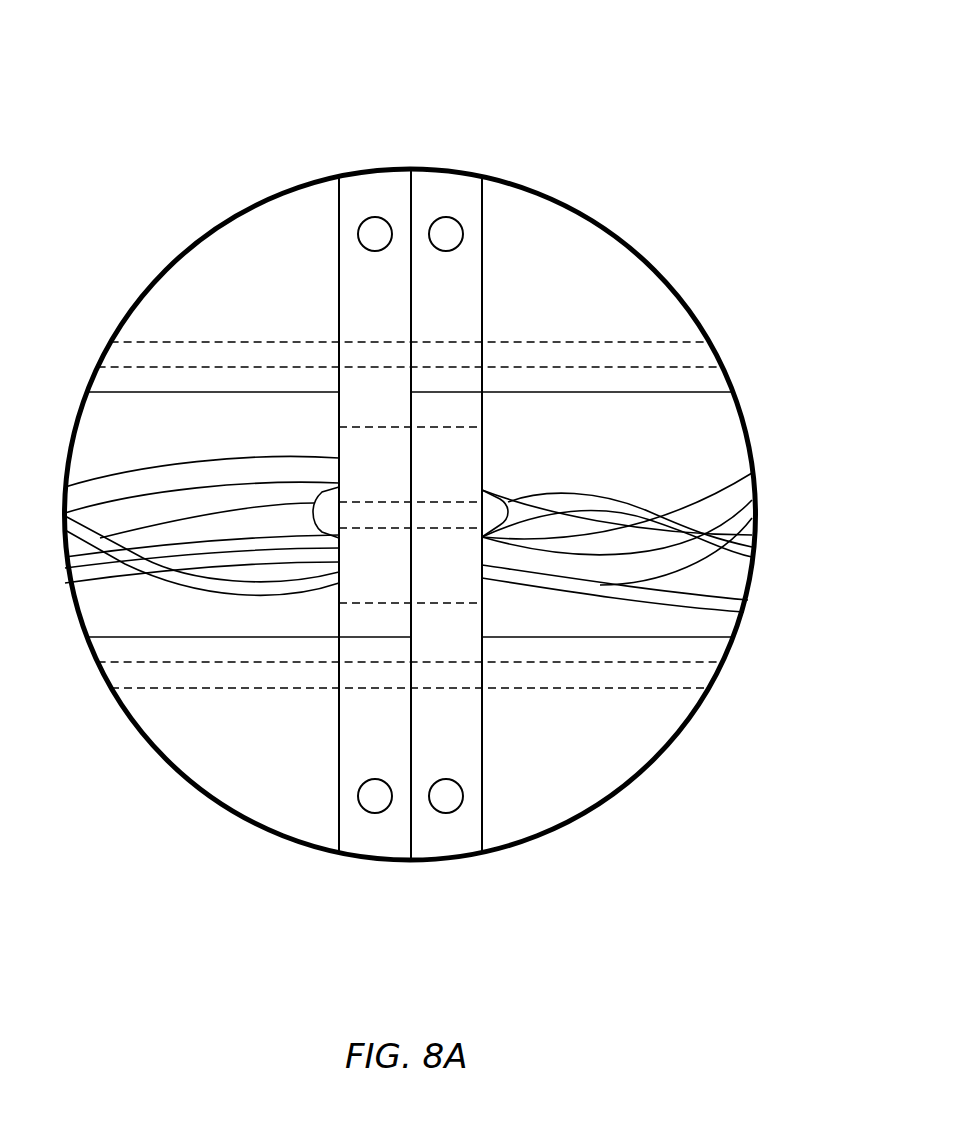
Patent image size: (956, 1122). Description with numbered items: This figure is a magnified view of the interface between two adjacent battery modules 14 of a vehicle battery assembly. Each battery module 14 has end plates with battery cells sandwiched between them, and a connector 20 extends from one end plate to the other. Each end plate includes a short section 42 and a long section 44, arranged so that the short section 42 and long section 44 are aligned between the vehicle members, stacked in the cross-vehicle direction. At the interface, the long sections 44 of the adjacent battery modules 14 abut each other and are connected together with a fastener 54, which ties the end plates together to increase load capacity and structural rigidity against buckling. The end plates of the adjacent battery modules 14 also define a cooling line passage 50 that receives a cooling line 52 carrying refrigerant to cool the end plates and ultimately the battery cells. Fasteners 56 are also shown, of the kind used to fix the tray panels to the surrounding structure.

The battery module 14 is at (237, 745).
The connector 20 is at (215, 342).
The short section 42 is at (482, 232).
The long section 44 is at (339, 232).
The cooling line passage 50 is at (442, 427).
The cooling line 52 is at (720, 495).
The fastener 54 is at (455, 528).
The fasteners 56 is at (375, 216).